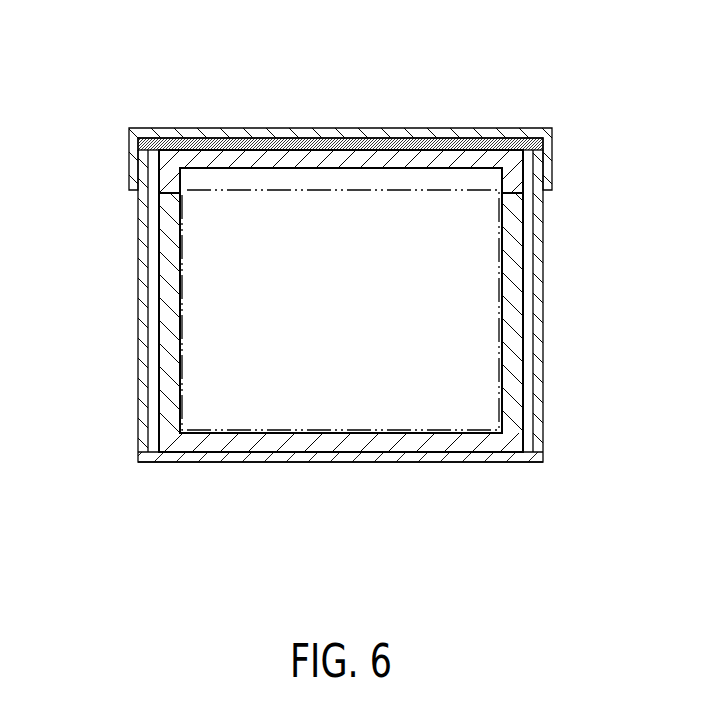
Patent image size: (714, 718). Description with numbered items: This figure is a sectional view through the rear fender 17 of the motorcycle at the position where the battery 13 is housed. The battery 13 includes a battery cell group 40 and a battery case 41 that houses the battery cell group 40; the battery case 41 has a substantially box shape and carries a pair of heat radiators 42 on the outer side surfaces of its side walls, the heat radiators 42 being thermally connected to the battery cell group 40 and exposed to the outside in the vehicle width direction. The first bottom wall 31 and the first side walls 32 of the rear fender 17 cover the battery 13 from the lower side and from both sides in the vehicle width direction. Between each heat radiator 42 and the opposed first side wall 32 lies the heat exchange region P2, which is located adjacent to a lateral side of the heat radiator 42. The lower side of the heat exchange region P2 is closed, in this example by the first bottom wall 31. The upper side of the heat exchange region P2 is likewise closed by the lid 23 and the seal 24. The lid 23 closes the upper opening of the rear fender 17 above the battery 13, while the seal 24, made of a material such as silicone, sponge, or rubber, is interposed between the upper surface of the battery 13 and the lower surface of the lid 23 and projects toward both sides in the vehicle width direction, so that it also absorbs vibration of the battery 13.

The battery 13 is at (528, 145).
The rear fender 17 is at (173, 462).
The lid 23 is at (136, 128).
The seal 24 is at (180, 140).
The first bottom wall 31 is at (342, 463).
The first side wall 32 is at (143, 382).
The battery cell group 40 is at (402, 205).
The battery case 41 is at (262, 160).
The heat radiator 42 is at (165, 260).
The heat exchange region P2 is at (153, 328).